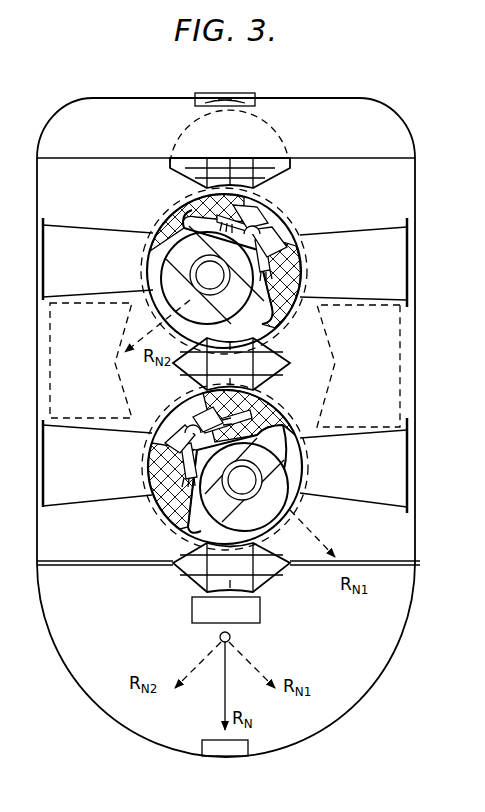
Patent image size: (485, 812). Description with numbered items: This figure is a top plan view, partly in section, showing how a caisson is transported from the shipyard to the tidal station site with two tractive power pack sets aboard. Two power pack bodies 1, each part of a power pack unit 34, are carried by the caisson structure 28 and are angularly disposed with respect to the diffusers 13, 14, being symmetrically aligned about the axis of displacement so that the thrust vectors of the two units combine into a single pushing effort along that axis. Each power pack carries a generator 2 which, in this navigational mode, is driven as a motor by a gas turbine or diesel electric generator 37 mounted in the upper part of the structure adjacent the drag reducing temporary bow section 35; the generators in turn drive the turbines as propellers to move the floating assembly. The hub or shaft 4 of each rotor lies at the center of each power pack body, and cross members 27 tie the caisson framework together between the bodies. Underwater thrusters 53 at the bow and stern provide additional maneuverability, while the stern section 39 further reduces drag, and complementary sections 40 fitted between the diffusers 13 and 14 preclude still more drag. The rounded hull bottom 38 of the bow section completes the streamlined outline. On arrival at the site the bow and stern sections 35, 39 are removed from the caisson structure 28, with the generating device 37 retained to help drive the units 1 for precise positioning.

The power pack body 1 is at (287, 302).
The generator 2 is at (272, 224).
The rotor hub shaft 4 is at (152, 279).
The diffuser 13 is at (362, 267).
The diffuser 14 is at (97, 267).
The cross member 27 is at (243, 184).
The caisson structure 28 is at (99, 203).
The power pack unit 34 is at (188, 214).
The drag reducing temporary bow section 35 is at (110, 657).
The gas turbine or diesel electric generator 37 is at (237, 621).
The hull bottom 38 is at (141, 739).
The stern section 39 is at (351, 134).
The complementary section 40 is at (88, 359).
The underwater thruster 53 is at (243, 93).